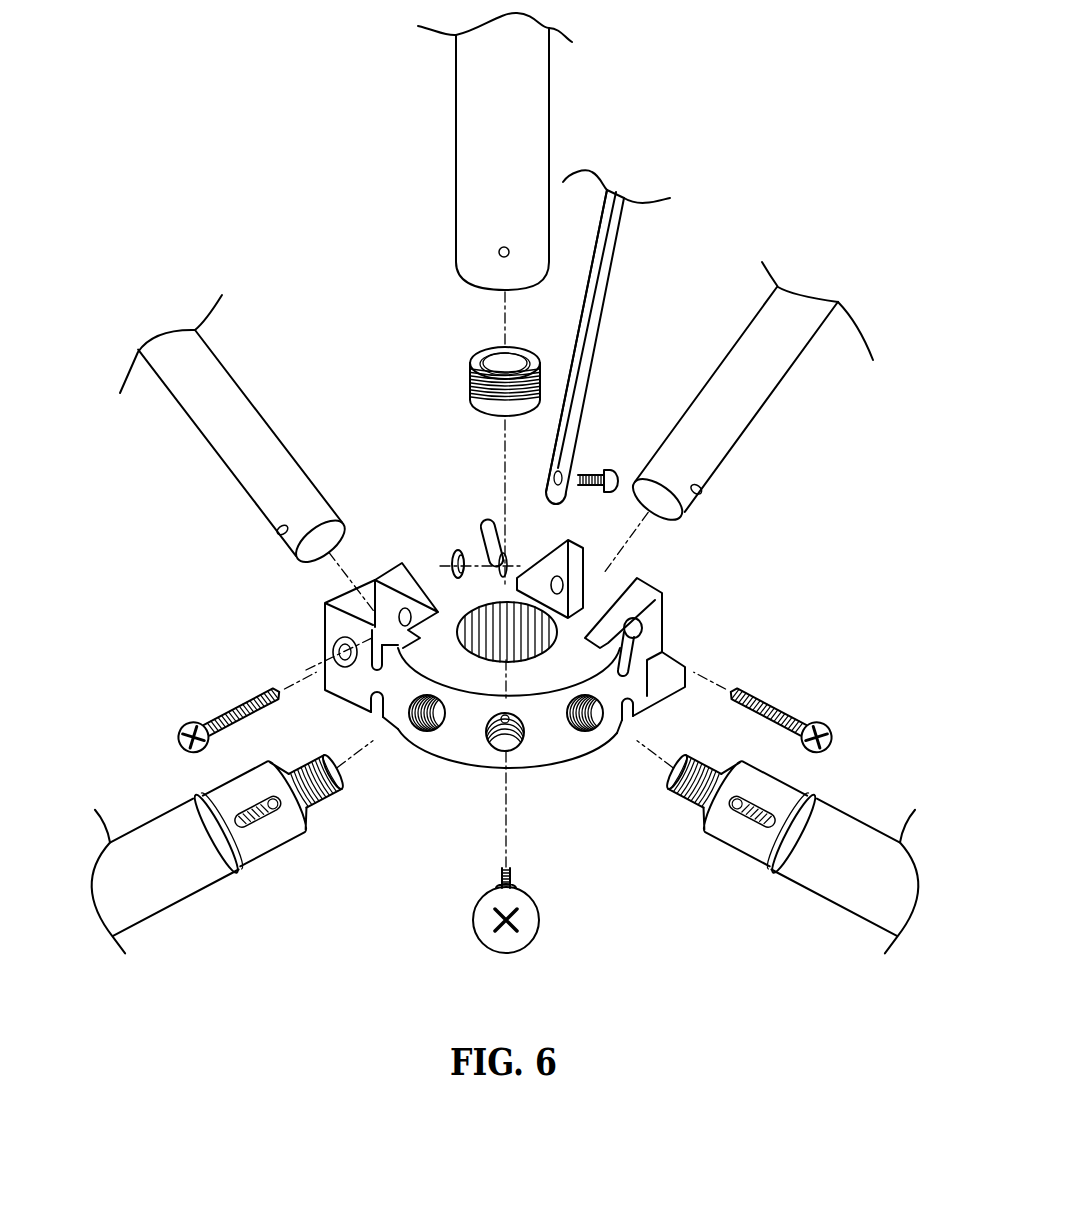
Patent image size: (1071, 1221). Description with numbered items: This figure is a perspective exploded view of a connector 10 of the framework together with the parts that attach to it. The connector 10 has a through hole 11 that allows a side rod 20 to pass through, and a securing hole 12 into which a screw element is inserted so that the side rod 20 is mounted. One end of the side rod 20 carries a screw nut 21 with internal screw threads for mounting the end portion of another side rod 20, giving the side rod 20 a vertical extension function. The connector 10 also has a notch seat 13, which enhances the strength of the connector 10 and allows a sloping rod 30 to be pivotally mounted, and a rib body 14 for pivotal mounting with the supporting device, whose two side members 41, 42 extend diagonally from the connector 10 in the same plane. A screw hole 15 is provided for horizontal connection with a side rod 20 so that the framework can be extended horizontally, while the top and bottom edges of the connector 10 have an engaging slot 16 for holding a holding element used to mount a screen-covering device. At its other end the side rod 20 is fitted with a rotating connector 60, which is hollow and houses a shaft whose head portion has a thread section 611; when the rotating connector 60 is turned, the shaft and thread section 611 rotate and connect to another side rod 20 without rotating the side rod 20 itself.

The connector 10 is at (470, 757).
The through hole 11 is at (455, 565).
The securing hole 12 is at (515, 748).
The notch seat 13 is at (382, 600).
The rib body 14 is at (494, 548).
The screw hole 15 is at (427, 733).
The engaging slot 16 is at (645, 630).
The side rod 20 is at (472, 140).
The screw nut 21 is at (470, 386).
The sloping rod 30 is at (262, 440).
The side member 41 is at (603, 287).
The side member 42 is at (576, 341).
The rotating connector 60 is at (275, 845).
The thread section 611 is at (325, 808).